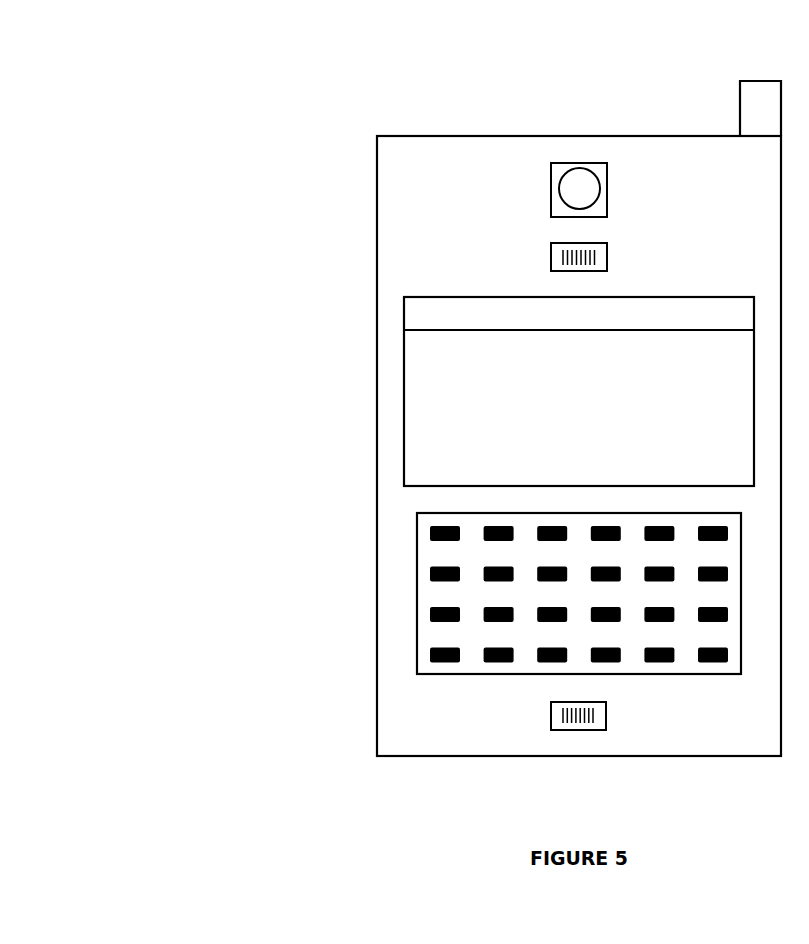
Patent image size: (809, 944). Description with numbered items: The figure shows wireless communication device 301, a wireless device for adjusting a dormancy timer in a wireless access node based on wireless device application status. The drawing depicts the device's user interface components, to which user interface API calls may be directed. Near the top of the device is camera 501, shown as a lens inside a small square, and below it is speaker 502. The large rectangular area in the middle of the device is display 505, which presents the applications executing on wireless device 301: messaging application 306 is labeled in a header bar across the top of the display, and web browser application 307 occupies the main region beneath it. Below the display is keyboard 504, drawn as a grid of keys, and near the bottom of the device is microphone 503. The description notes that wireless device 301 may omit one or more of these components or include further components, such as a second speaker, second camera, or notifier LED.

The wireless communication device 301 is at (98, 96).
The camera 501 is at (607, 184).
The speaker 502 is at (607, 258).
The microphone 503 is at (606, 716).
The keyboard 504 is at (486, 675).
The display 505 is at (579, 378).
The messaging application 306 is at (579, 317).
The web browser application 307 is at (579, 408).